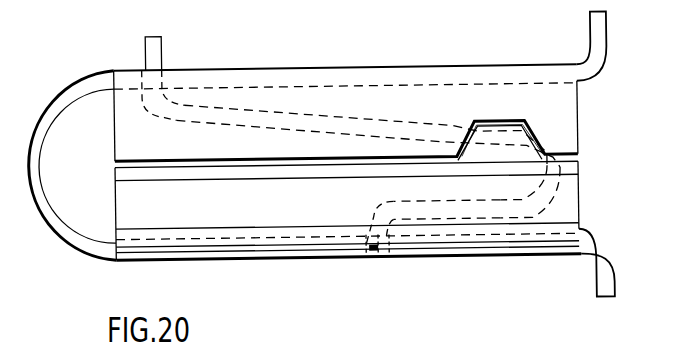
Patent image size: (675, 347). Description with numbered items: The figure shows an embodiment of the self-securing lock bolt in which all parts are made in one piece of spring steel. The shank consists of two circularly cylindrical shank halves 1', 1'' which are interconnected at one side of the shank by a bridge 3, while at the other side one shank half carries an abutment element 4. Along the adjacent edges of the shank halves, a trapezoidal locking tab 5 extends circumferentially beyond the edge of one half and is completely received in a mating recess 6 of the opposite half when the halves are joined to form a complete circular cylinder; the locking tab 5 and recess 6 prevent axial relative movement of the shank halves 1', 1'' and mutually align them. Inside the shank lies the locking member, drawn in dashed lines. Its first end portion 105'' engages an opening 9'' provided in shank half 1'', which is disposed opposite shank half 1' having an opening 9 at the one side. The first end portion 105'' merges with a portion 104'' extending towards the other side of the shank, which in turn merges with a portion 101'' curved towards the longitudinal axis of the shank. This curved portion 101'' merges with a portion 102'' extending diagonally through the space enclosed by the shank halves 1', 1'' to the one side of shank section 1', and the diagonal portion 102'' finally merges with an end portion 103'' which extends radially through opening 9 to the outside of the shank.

The shank half 1' is at (345, 88).
The shank half 1'' is at (348, 234).
The bridge 3 is at (58, 228).
The abutment element 4 is at (600, 34).
The locking tab 5 is at (529, 143).
The recess 6 is at (512, 124).
The opening 9 is at (145, 69).
The opening 9'' is at (358, 252).
The curved portion 101'' is at (564, 194).
The diagonal portion 102'' is at (345, 96).
The end portion 103'' is at (186, 41).
The portion extending towards the other side of the shank 104'' is at (456, 251).
The first end portion 105'' is at (399, 268).